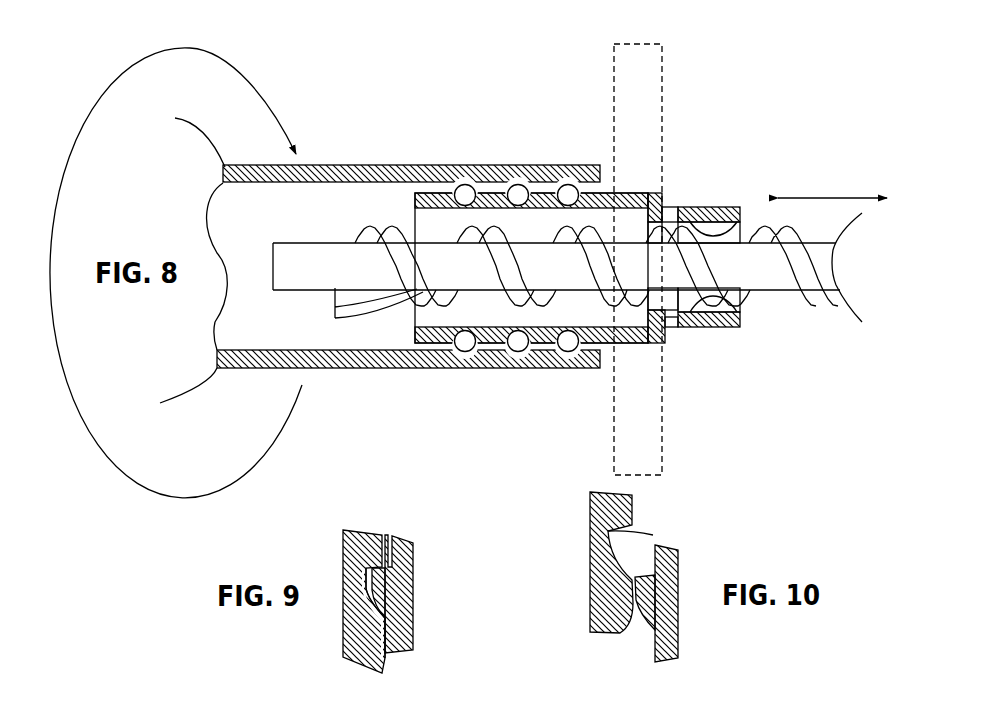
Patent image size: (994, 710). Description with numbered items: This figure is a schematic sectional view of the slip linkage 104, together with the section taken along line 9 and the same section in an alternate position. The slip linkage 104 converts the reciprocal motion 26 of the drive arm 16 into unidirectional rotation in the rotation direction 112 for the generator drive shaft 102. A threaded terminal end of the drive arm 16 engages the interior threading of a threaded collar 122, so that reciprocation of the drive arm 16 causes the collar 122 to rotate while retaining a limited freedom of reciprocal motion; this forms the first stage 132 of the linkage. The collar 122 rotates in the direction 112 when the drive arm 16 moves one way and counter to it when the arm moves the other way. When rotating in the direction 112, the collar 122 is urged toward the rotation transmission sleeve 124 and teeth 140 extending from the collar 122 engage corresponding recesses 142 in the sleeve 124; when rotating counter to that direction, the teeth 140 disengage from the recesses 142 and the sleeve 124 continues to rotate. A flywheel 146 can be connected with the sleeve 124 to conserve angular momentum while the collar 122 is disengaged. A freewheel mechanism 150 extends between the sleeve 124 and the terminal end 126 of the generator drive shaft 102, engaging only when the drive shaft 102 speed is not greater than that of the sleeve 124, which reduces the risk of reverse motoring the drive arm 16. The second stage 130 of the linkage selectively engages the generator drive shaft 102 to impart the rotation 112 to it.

In FIG. 8, the rotation direction 112 is at (215, 58).
In FIG. 8, the generator drive shaft 102 is at (217, 348).
In FIG. 8, the slip linkage 104 is at (349, 115).
In FIG. 8, the terminal end of the generator drive shaft 126 is at (386, 369).
In FIG. 8, the rotation transmission sleeve 124 is at (617, 345).
In FIG. 9, the rotation transmission sleeve 124 is at (357, 657).
In FIG. 10, the rotation transmission sleeve 124 is at (600, 493).
In FIG. 8, the recesses 142 is at (657, 194).
In FIG. 9, the recesses 142 is at (348, 600).
In FIG. 10, the recesses 142 is at (653, 535).
In FIG. 8, the teeth 140 is at (667, 208).
In FIG. 9, the teeth 140 is at (413, 593).
In FIG. 10, the teeth 140 is at (663, 602).
In FIG. 8, the threaded collar 122 is at (728, 330).
In FIG. 9, the threaded collar 122 is at (405, 625).
In FIG. 10, the threaded collar 122 is at (672, 652).
In FIG. 8, the first stage 132 is at (427, 152).
In FIG. 8, the coupling assembly 130 is at (600, 153).
In FIG. 8, the flywheel 146 is at (614, 84).
In FIG. 8, the drive arm 16 is at (823, 252).
In FIG. 8, the reciprocal motion 26 is at (838, 198).
In FIG. 8, the freewheel mechanism 150 is at (403, 342).
In FIG. 8, the section line 9- 9 is at (648, 322).